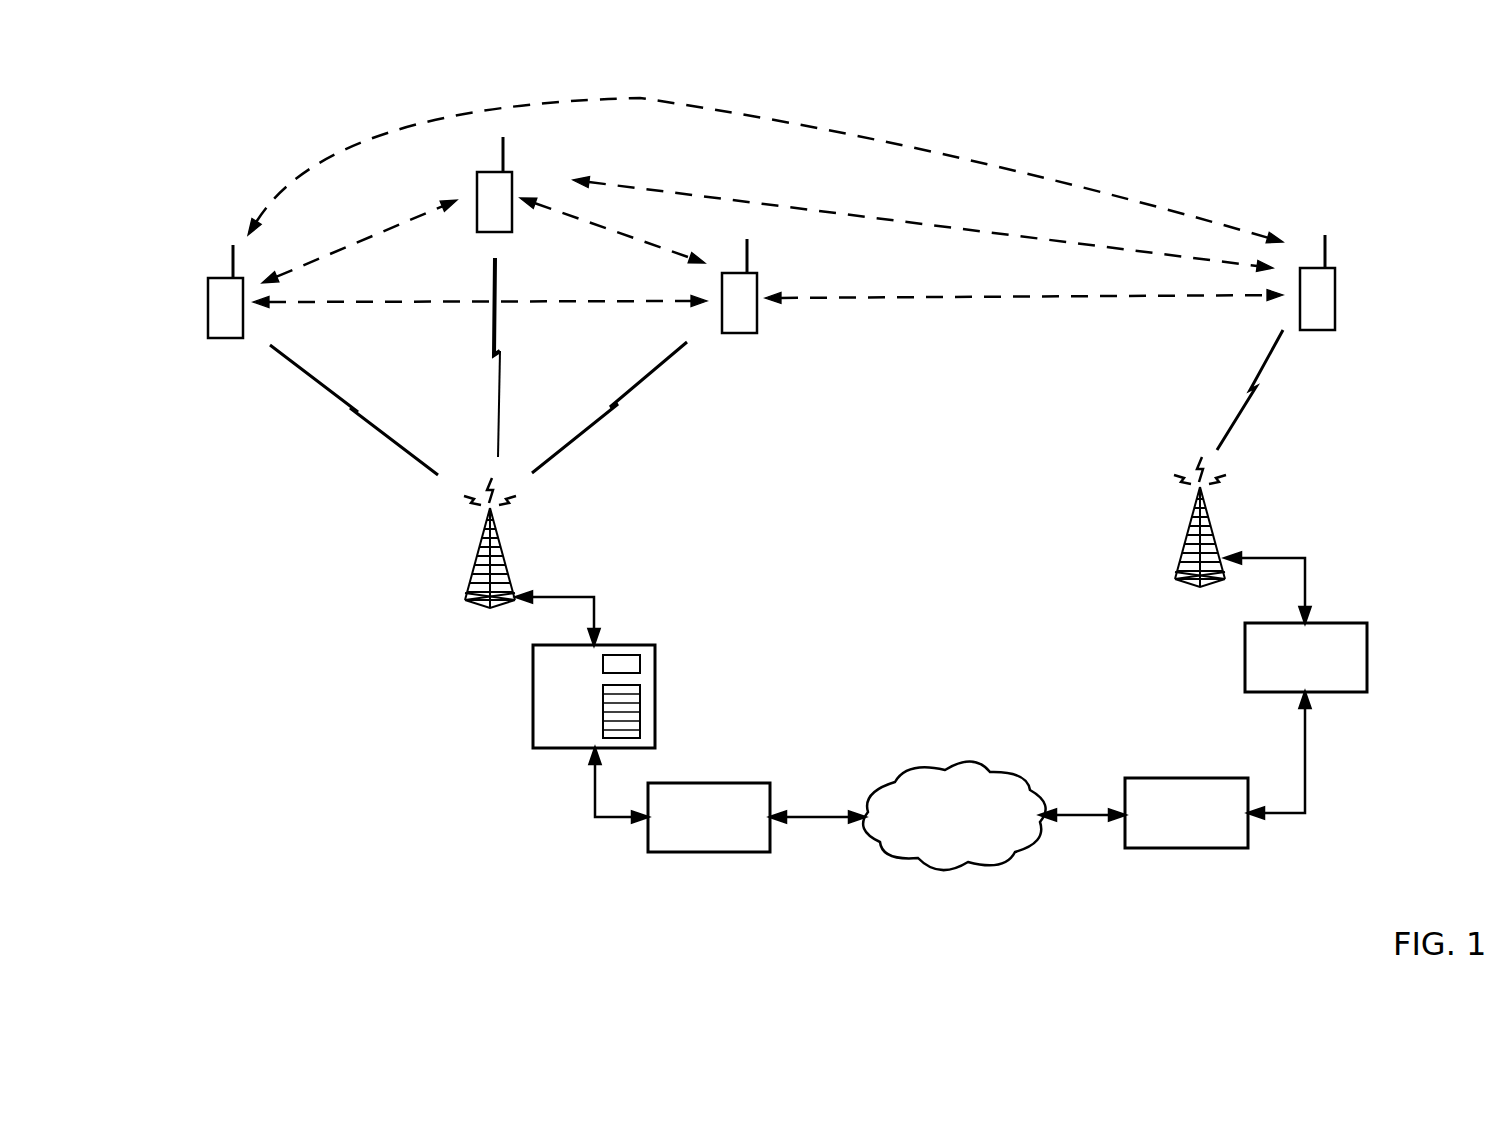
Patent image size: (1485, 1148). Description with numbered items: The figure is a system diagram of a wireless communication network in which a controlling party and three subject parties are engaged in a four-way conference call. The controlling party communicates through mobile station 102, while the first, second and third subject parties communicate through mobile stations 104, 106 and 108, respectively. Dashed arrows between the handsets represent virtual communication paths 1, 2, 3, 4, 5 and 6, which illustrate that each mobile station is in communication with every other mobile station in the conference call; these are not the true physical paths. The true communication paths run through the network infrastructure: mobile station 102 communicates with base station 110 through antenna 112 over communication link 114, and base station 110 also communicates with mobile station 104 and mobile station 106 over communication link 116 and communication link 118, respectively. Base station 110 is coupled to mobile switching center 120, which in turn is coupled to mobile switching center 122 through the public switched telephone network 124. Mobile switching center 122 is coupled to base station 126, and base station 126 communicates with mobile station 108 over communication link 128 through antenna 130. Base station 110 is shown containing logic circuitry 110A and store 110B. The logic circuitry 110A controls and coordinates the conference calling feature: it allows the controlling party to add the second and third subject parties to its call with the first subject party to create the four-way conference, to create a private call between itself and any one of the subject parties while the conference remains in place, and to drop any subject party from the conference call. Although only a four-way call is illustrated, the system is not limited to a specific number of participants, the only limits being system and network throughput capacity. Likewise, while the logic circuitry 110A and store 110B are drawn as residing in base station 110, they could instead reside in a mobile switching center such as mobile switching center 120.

The virtual communication path 1 is at (390, 230).
The virtual communication path 2 is at (457, 300).
The virtual communication path 3 is at (413, 120).
The virtual communication path 4 is at (627, 235).
The virtual communication path 5 is at (712, 195).
The virtual communication path 6 is at (845, 297).
The mobile station 102 is at (222, 339).
The mobile station 104 is at (512, 188).
The mobile station 106 is at (748, 334).
The mobile station 108 is at (1335, 305).
The base station 110 is at (616, 722).
The logic circuitry 110A is at (640, 663).
The store 110B is at (640, 727).
The antenna 112 is at (507, 557).
The communication link 114 is at (375, 428).
The communication link 116 is at (497, 330).
The communication link 118 is at (585, 437).
The mobile switching center 120 is at (670, 853).
The mobile switching center 122 is at (1178, 848).
The public switched telephone network 124 is at (993, 862).
The base station 126 is at (1367, 655).
The communication link 128 is at (1243, 405).
The antenna 130 is at (1217, 536).